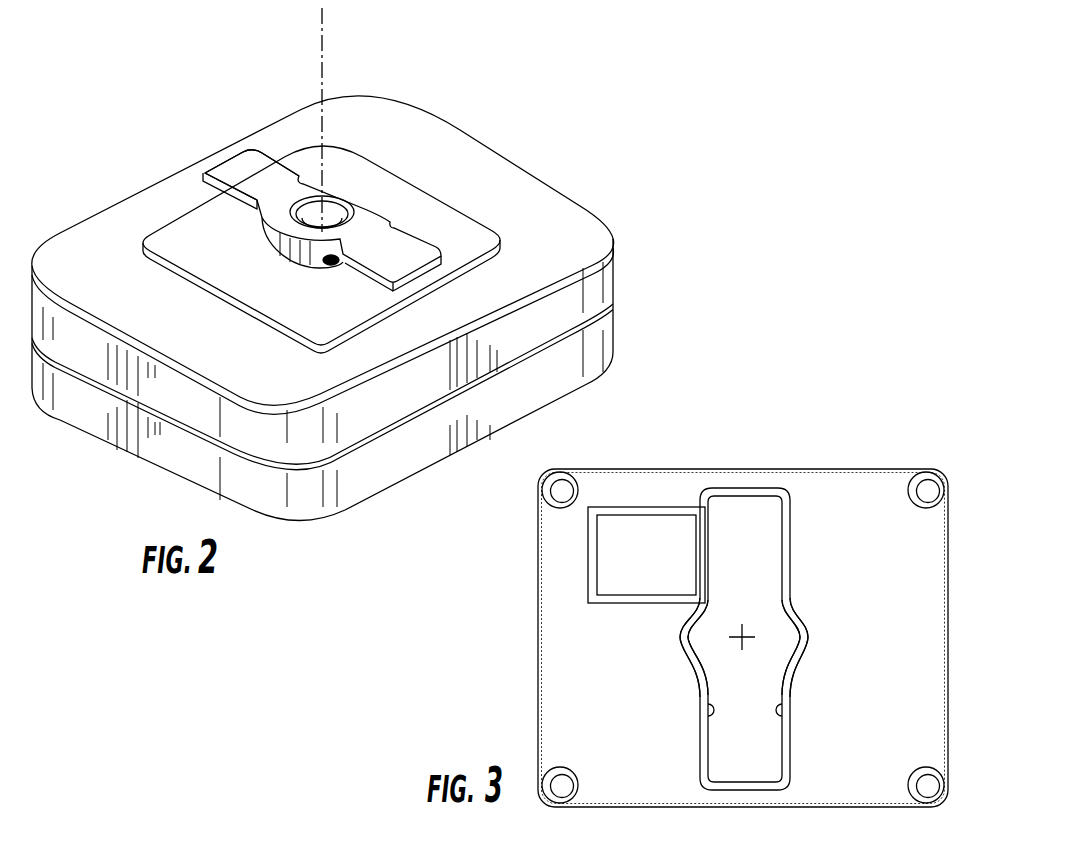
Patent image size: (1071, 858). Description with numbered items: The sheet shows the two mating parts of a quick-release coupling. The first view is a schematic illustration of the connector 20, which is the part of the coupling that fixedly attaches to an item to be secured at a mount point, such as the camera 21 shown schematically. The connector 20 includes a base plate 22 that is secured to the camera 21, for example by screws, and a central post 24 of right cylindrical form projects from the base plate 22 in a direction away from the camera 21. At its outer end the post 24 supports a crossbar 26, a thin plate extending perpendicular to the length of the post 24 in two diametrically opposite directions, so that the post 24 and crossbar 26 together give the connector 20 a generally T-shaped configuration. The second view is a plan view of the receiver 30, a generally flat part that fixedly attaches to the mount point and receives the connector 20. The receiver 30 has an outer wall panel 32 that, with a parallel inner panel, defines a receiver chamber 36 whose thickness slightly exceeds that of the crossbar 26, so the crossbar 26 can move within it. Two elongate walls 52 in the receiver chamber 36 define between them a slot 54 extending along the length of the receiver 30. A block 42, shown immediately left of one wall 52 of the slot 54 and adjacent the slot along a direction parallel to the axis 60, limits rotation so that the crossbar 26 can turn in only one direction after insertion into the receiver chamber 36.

In FIG. 2, the connector 20 is at (348, 264).
In FIG. 2, the camera 21 is at (613, 260).
In FIG. 2, the base plate 22 is at (480, 232).
In FIG. 2, the central post 24 is at (287, 242).
In FIG. 2, the crossbar 26 is at (242, 163).
In FIG. 2, the axis 60 is at (322, 62).
In FIG. 3, the axis 60 is at (744, 637).
In FIG. 3, the receiver 30 is at (694, 638).
In FIG. 3, the outer wall panel 32 is at (548, 680).
In FIG. 3, the receiver chamber 36 is at (757, 540).
In FIG. 3, the block 42 is at (587, 555).
In FIG. 3, the elongate walls 52 is at (712, 713).
In FIG. 3, the slot 54 is at (765, 665).